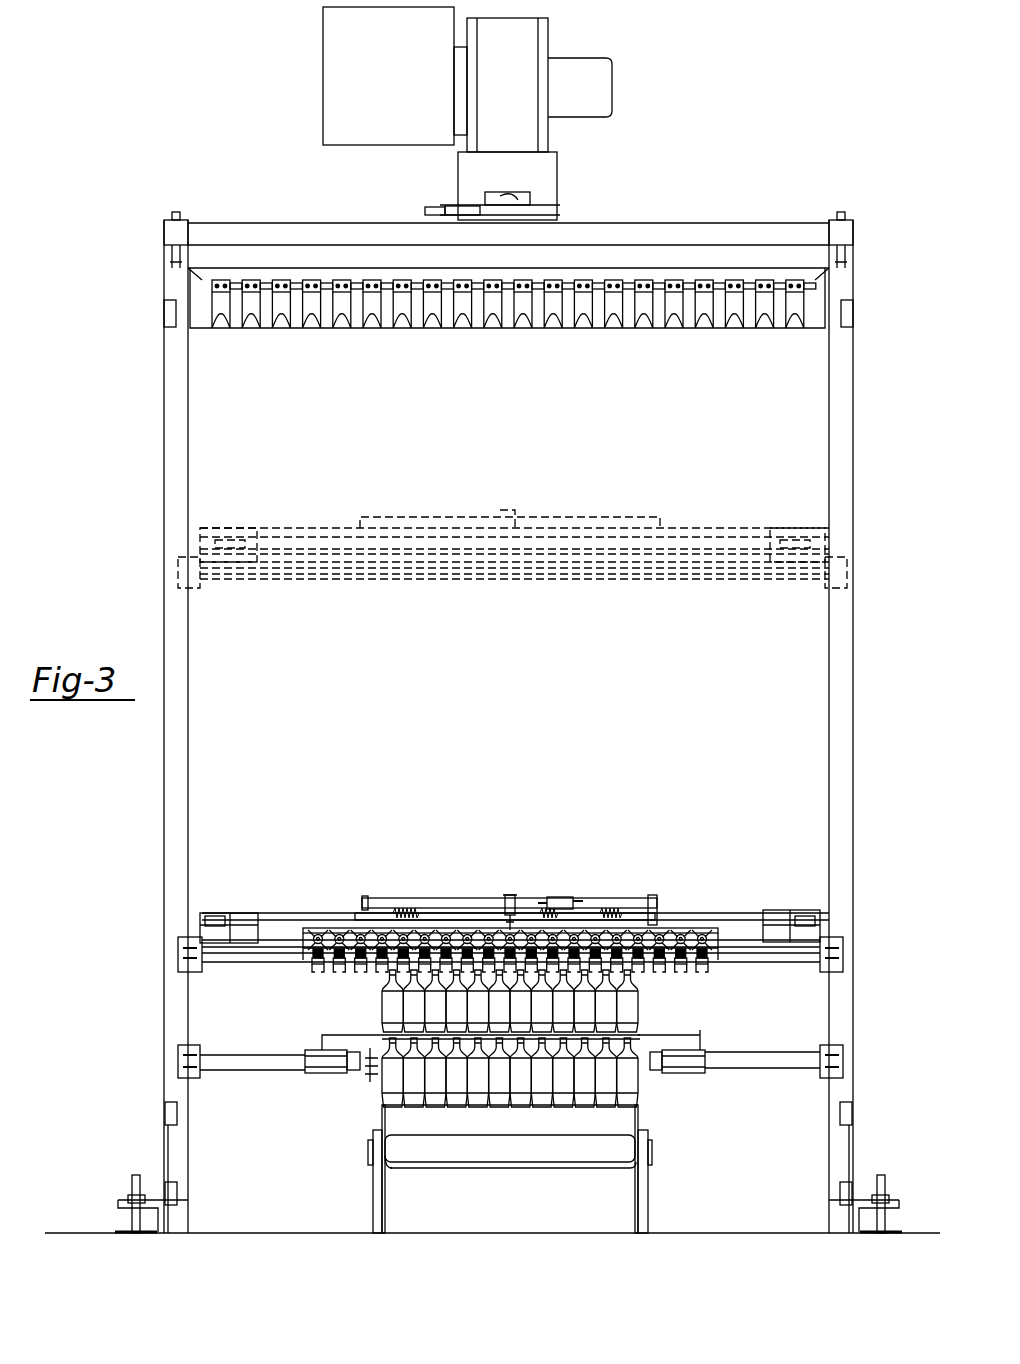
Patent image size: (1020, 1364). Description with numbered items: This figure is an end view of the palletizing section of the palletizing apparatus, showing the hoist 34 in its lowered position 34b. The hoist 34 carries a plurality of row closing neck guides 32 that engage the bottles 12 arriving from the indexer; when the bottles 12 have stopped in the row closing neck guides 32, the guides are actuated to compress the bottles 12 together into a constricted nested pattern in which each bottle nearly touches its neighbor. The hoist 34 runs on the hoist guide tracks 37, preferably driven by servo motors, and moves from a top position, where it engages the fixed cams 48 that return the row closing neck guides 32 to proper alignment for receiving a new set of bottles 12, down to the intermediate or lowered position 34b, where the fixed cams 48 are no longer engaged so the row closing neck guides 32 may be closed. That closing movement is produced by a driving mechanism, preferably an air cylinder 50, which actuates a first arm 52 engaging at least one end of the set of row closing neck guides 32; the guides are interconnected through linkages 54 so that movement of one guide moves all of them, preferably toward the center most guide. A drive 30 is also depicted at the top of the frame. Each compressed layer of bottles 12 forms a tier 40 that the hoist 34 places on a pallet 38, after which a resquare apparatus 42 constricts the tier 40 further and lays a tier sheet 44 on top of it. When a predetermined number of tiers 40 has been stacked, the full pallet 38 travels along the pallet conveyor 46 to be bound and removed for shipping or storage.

The bottles 12 is at (388, 1005).
The drive motor assembly 30 is at (545, 175).
The row closing neck guides 32 is at (305, 975).
The hoist 34 is at (702, 898).
The lowered position 34b is at (183, 572).
The hoist guide tracks 37 is at (845, 512).
The pallet 38 is at (393, 1115).
The tier 40 is at (640, 1105).
The resquare apparatus 42 is at (655, 1034).
The tier sheet 44 is at (598, 1040).
The pallet conveyor 46 is at (620, 1148).
The fixed cams 48 is at (790, 310).
The air cylinder 50 is at (468, 900).
The first arm 52 is at (592, 906).
The linkages 54 is at (345, 910).